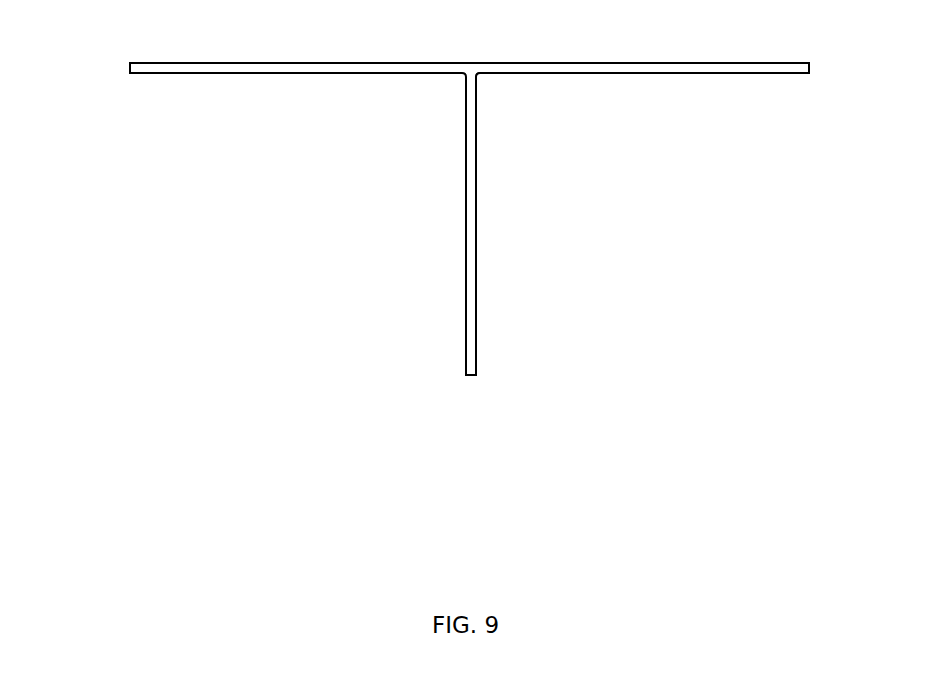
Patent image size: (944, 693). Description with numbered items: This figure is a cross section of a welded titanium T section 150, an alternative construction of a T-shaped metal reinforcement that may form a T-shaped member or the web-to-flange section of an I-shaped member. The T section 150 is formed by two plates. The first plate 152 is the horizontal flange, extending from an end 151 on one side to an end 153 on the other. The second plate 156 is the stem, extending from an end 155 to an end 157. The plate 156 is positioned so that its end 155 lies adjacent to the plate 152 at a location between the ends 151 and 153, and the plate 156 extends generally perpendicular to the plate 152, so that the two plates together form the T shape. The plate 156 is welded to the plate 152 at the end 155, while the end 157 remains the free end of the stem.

The T section 150 is at (312, 205).
The end 151 is at (129, 68).
The plate 152 is at (215, 62).
The end 153 is at (811, 70).
The end 155 is at (480, 75).
The plate 156 is at (477, 235).
The end 157 is at (469, 378).